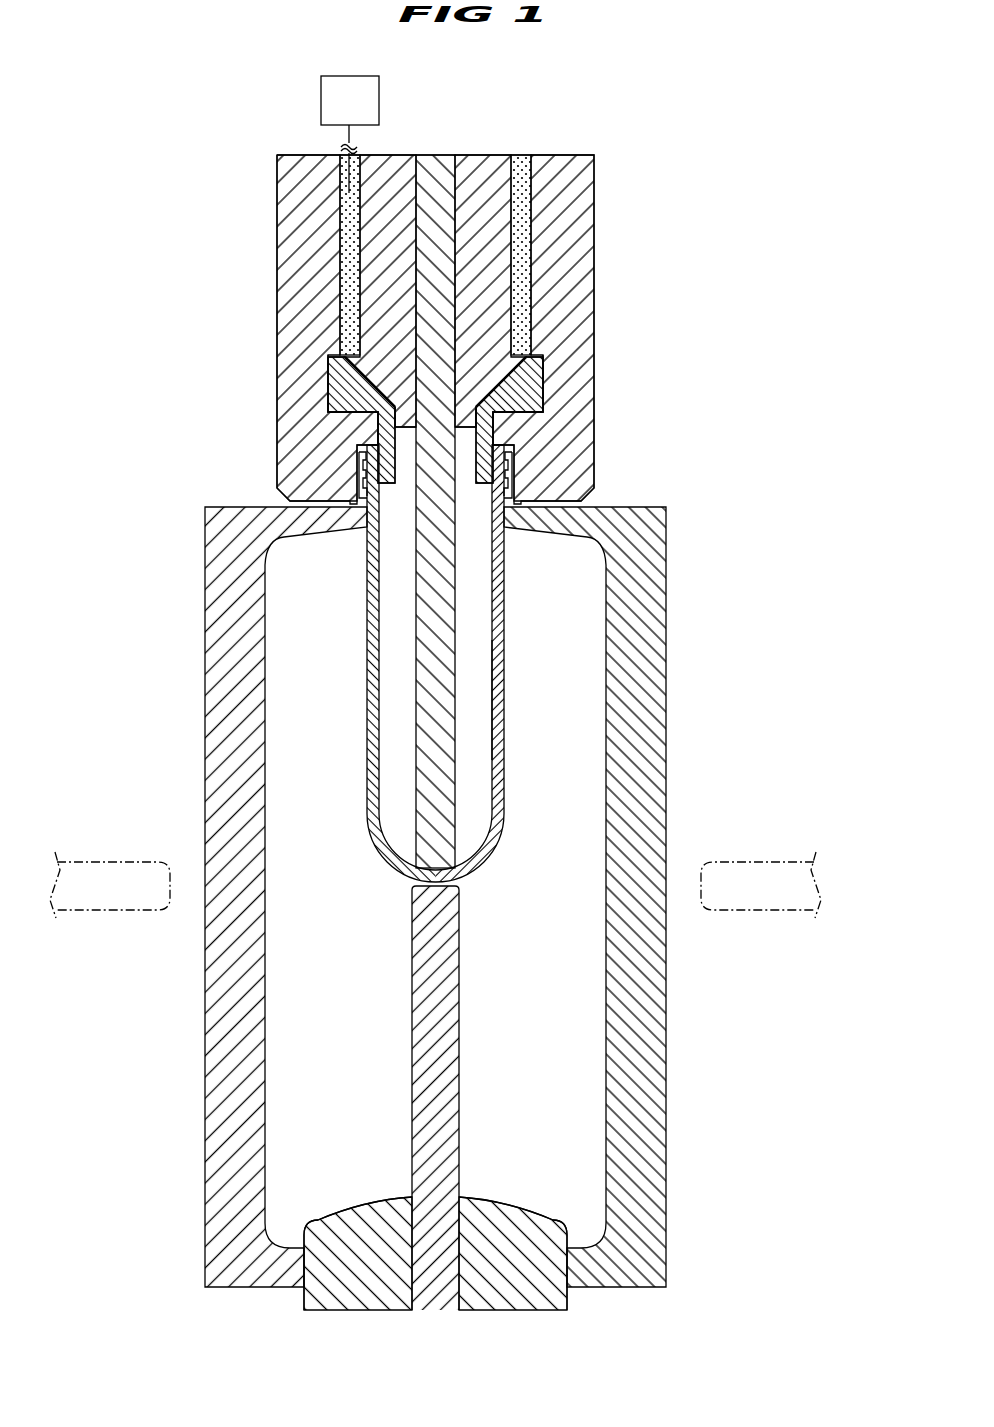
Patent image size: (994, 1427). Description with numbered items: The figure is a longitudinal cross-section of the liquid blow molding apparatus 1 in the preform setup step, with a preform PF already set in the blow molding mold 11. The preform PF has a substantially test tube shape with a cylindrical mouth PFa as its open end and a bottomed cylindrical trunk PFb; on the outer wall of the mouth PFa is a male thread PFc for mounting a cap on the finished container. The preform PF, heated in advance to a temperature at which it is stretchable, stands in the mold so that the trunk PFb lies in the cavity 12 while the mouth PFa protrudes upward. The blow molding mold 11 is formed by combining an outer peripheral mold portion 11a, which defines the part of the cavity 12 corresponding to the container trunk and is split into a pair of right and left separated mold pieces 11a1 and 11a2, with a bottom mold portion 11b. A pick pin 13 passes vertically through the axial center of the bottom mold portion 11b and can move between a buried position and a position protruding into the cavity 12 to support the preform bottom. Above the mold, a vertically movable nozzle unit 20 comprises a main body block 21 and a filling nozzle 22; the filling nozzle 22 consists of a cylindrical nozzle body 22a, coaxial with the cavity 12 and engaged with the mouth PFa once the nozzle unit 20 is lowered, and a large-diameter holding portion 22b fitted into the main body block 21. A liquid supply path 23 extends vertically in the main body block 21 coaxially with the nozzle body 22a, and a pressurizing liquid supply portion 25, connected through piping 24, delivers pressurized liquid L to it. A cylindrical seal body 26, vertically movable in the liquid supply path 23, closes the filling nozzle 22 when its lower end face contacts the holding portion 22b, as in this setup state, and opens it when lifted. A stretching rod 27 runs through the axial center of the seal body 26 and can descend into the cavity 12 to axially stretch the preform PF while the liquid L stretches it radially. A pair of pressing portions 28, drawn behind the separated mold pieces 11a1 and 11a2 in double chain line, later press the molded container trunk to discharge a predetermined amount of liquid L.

The liquid blow molding apparatus 1 is at (667, 214).
The blow molding mold 11 is at (667, 550).
The outer peripheral mold portion 11a is at (667, 1007).
The separated mold piece 11a1 is at (236, 1078).
The separated mold piece 11a2 is at (668, 1070).
The bottom mold portion 11b is at (567, 1304).
The cavity 12 is at (351, 1029).
The pick pin 13 is at (461, 1075).
The nozzle unit 20 is at (595, 176).
The main body block 21 is at (574, 252).
The filling nozzle 22 is at (544, 382).
The nozzle body 22a is at (388, 462).
The holding portion 22b is at (338, 379).
The liquid supply path 23 is at (348, 220).
The piping 24 is at (353, 143).
The pressurizing liquid supply portion 25 is at (381, 100).
The seal body 26 is at (376, 265).
The stretching rod 27 is at (428, 640).
The pressing portions 28 is at (110, 885).
The liquid L is at (521, 292).
The preform PF is at (504, 639).
The mouth PFa is at (502, 465).
The trunk PFb is at (503, 702).
The male thread PFc is at (364, 490).